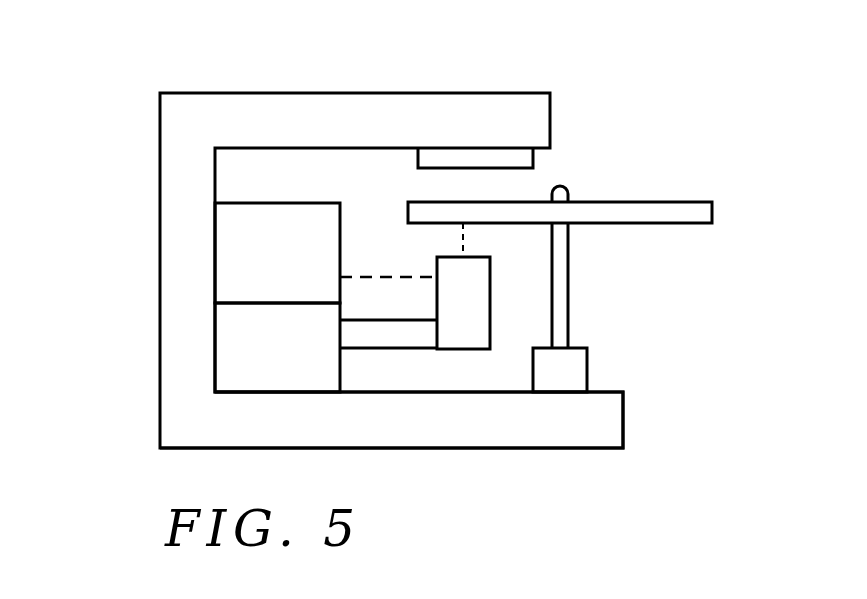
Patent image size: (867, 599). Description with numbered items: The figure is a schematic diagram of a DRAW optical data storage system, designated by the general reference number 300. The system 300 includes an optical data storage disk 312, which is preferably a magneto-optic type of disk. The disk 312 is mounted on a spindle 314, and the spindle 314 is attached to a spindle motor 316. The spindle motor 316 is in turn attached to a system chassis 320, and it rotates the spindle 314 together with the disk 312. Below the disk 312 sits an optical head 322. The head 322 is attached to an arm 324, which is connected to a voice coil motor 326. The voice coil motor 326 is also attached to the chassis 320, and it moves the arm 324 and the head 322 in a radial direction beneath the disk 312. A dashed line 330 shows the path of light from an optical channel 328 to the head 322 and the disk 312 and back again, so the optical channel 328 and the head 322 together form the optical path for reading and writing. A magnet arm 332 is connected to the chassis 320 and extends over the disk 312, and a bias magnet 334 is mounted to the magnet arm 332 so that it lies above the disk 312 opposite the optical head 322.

The optical data storage system 300 is at (128, 459).
The optical data storage disk 312 is at (692, 202).
The spindle 314 is at (570, 258).
The spindle motor 316 is at (582, 368).
The system chassis 320 is at (613, 425).
The optical head 322 is at (465, 297).
The arm 324 is at (400, 337).
The voice coil motor 326 is at (277, 347).
The optical channel 328 is at (277, 253).
The dashed line 330 is at (412, 275).
The magnet arm 332 is at (259, 104).
The bias magnet 334 is at (523, 160).